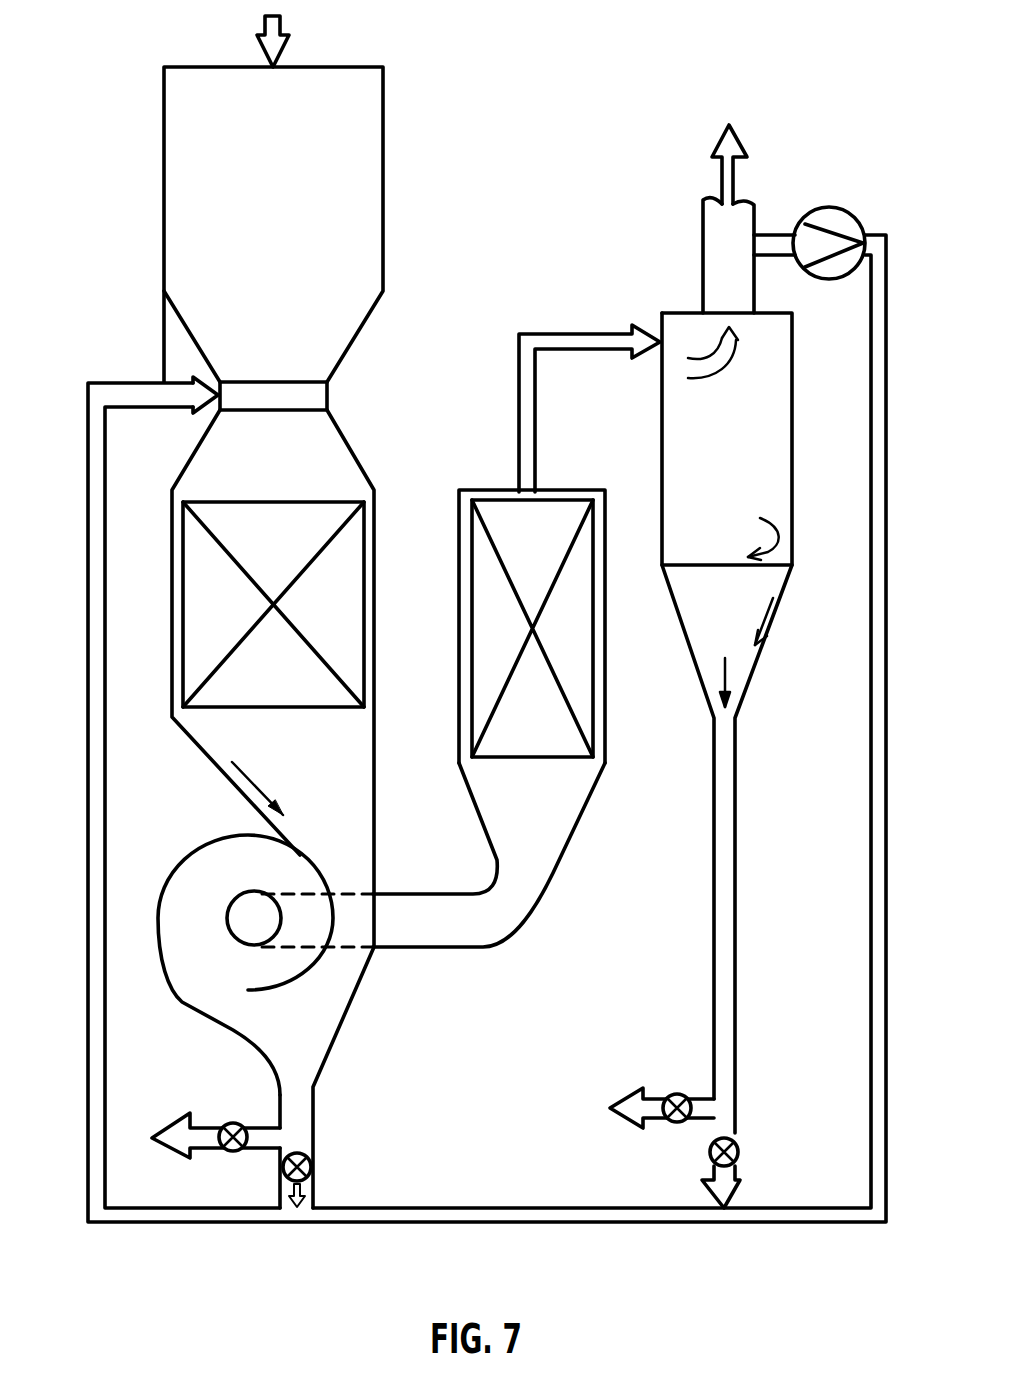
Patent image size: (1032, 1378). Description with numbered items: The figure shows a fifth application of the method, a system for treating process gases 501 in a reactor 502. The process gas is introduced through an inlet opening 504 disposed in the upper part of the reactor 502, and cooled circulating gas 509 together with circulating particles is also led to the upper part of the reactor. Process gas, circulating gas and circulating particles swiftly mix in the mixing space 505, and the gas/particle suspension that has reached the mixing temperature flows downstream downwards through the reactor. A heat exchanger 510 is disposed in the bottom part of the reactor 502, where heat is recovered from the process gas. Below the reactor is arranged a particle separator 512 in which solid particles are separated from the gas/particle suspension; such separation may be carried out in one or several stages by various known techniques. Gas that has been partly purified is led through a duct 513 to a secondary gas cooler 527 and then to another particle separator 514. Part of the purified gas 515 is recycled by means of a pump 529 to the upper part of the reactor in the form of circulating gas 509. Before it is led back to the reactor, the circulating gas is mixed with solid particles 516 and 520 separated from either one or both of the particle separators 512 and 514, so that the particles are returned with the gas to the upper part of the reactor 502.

The process gases 501 is at (276, 28).
The reactor 502 is at (372, 457).
The inlet opening 504 is at (280, 384).
The mixing space 505 is at (302, 404).
The circulating gas 509 is at (155, 395).
The heat exchanger 510 is at (202, 627).
The particle separator 512 is at (207, 868).
The duct 513 is at (460, 932).
The particle separator 514 is at (775, 453).
The purified gas 515 is at (717, 270).
The solid particles 516 is at (302, 1115).
The solid particles 520 is at (714, 1060).
The secondary gas cooler 527 is at (582, 685).
The pump 529 is at (833, 222).